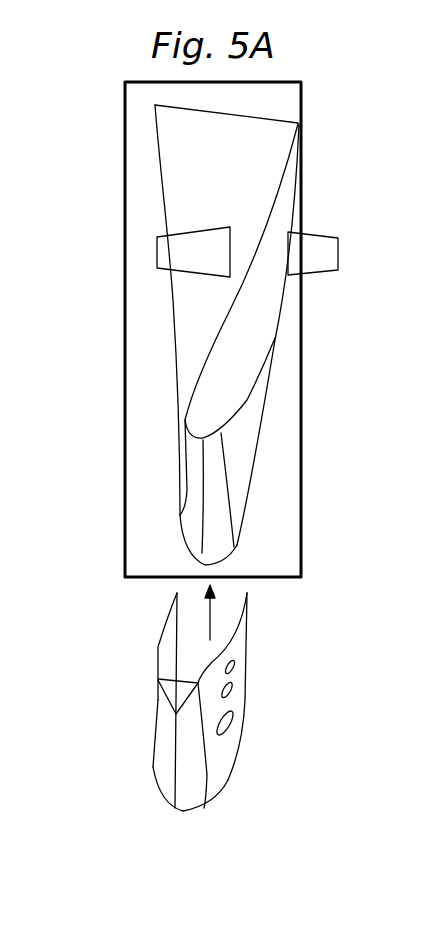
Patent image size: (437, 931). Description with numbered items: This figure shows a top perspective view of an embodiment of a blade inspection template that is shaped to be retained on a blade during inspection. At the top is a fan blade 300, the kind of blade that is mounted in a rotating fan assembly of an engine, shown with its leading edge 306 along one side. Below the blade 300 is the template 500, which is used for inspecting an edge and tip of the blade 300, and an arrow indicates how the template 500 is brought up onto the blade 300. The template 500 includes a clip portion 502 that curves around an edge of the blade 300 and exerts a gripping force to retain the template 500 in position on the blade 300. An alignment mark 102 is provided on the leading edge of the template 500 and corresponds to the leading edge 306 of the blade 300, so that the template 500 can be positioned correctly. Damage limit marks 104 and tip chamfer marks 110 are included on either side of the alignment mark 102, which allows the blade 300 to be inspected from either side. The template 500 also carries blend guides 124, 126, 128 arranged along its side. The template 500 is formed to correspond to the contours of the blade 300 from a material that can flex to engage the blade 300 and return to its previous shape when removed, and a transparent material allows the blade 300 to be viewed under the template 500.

The fan blade 300 is at (225, 335).
The leading edge 306 is at (203, 462).
The template 500 is at (205, 715).
The clip portion 502 is at (166, 618).
The tip chamfer marks 110 is at (163, 682).
The blend guide 124 is at (235, 662).
The blend guide 126 is at (237, 687).
The blend guide 128 is at (238, 722).
The damage limit marks 104 is at (157, 762).
The alignment mark 102 is at (172, 807).